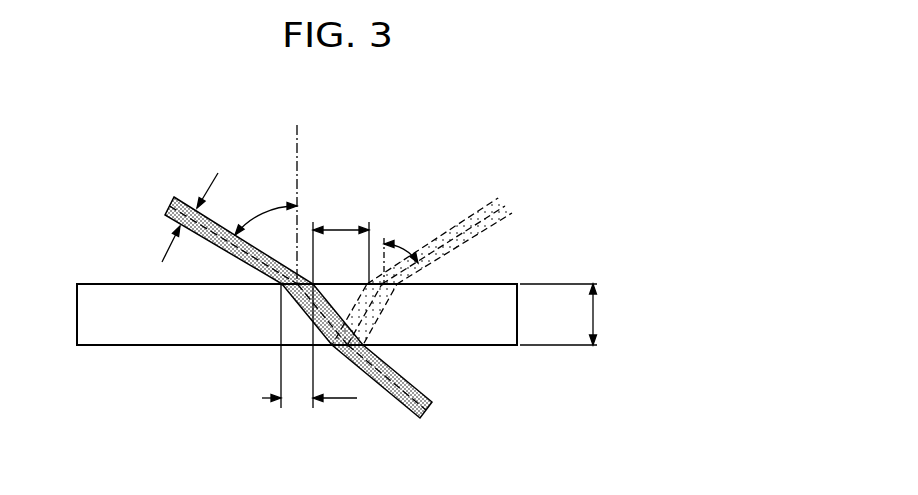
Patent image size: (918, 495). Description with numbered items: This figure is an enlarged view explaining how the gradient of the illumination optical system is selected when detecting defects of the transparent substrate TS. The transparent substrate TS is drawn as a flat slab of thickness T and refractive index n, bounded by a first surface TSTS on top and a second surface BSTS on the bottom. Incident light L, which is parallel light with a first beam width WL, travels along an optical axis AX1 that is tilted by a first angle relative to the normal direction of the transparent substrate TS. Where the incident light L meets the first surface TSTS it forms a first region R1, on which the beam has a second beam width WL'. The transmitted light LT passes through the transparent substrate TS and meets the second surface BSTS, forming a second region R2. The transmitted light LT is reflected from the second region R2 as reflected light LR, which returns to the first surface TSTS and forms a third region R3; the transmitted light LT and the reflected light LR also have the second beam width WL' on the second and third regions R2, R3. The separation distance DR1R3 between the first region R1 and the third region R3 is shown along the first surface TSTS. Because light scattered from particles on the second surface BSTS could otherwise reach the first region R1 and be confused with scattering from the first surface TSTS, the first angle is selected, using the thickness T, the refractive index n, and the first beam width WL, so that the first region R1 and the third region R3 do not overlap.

The transparent substrate TS is at (518, 315).
The refractive index of the transparent substrate n is at (297, 314).
The first surface of the transparent substrate TSTS is at (487, 284).
The second surface of the transparent substrate BSTS is at (487, 345).
The thickness of the transparent substrate T is at (566, 314).
The optical axis of the incident light AX1 is at (186, 200).
The incident light L is at (230, 251).
The first beam width of the incident light WL is at (177, 217).
The transmitted light LT is at (307, 315).
The reflected light LR is at (473, 213).
The first region R1 is at (266, 293).
The second region R2 is at (348, 361).
The third region R3 is at (411, 297).
The separation distance between the first region and the third region DR1R3 is at (341, 240).
The second beam width WL' is at (309, 359).